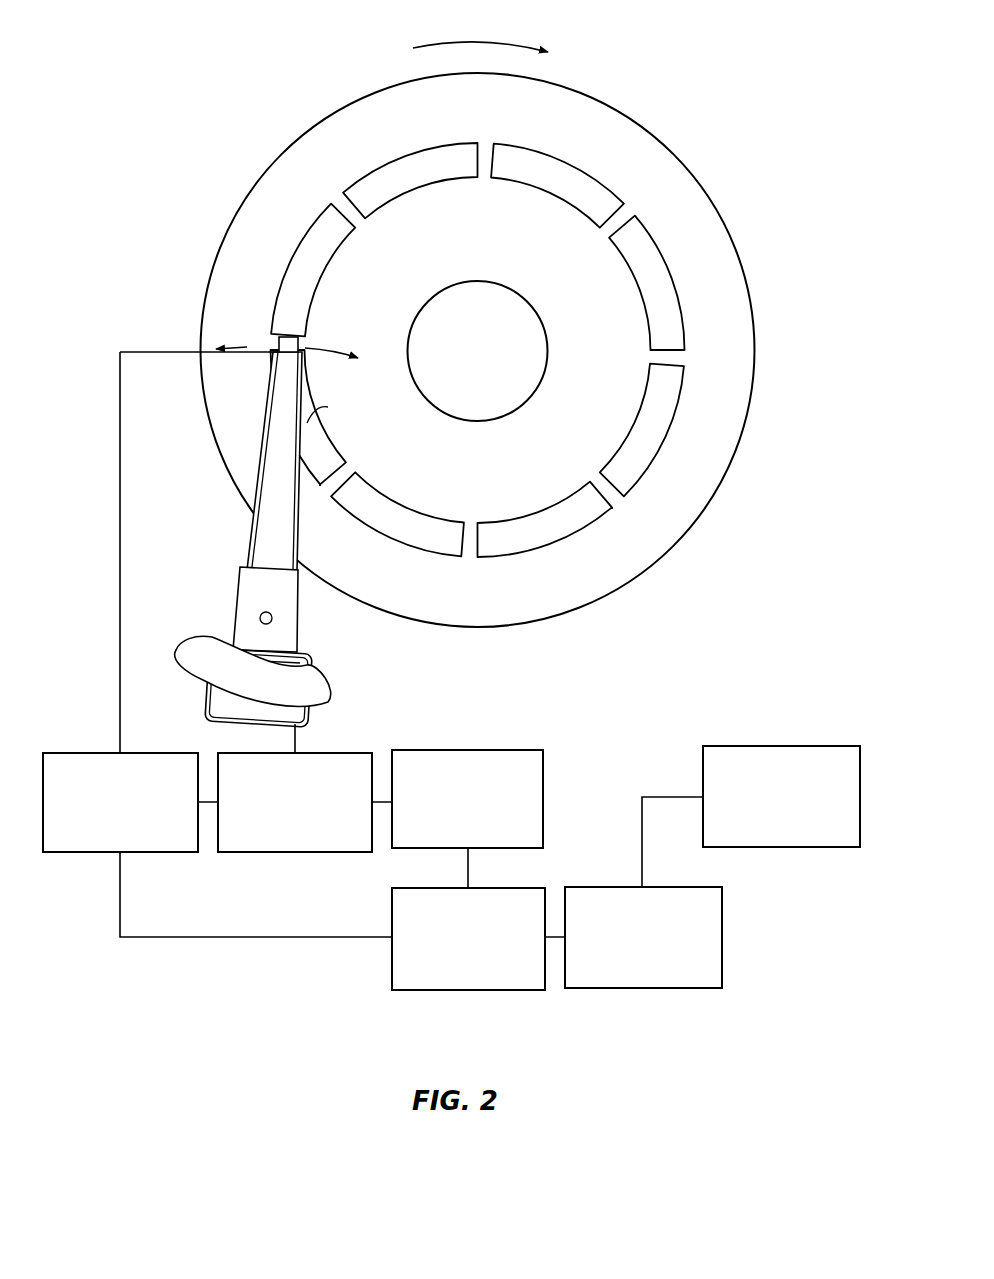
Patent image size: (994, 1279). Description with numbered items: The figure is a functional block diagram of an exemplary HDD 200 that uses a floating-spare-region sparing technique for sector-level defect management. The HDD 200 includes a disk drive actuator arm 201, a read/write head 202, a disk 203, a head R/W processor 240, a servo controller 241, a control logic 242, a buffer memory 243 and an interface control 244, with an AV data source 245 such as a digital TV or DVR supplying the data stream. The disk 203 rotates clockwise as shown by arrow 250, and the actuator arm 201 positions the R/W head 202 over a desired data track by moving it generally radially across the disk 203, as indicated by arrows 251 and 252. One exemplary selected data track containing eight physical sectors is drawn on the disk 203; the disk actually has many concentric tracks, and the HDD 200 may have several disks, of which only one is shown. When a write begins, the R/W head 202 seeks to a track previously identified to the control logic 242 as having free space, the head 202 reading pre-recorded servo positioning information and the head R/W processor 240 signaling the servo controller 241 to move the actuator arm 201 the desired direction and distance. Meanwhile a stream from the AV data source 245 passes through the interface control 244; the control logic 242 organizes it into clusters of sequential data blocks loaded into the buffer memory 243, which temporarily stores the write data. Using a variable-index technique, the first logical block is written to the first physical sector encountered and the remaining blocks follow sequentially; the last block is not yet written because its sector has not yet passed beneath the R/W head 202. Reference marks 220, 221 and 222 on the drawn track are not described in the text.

The HDD 200 is at (695, 84).
The disk drive actuator arm 201 is at (240, 576).
The read/write head 202 is at (279, 343).
The disk 203 is at (267, 172).
The servo sector 220 is at (463, 557).
The servo sector boundary 221 is at (612, 509).
The servo sector boundary 222 is at (320, 486).
The head R/W processor 240 is at (120, 802).
The servo controller 241 is at (295, 802).
The control logic 242 is at (467, 799).
The buffer memory 243 is at (468, 939).
The interface control 244 is at (643, 937).
The AV data source 245 is at (781, 796).
The arrow 250 is at (480, 43).
The arrow 251 is at (328, 350).
The arrow 252 is at (247, 348).